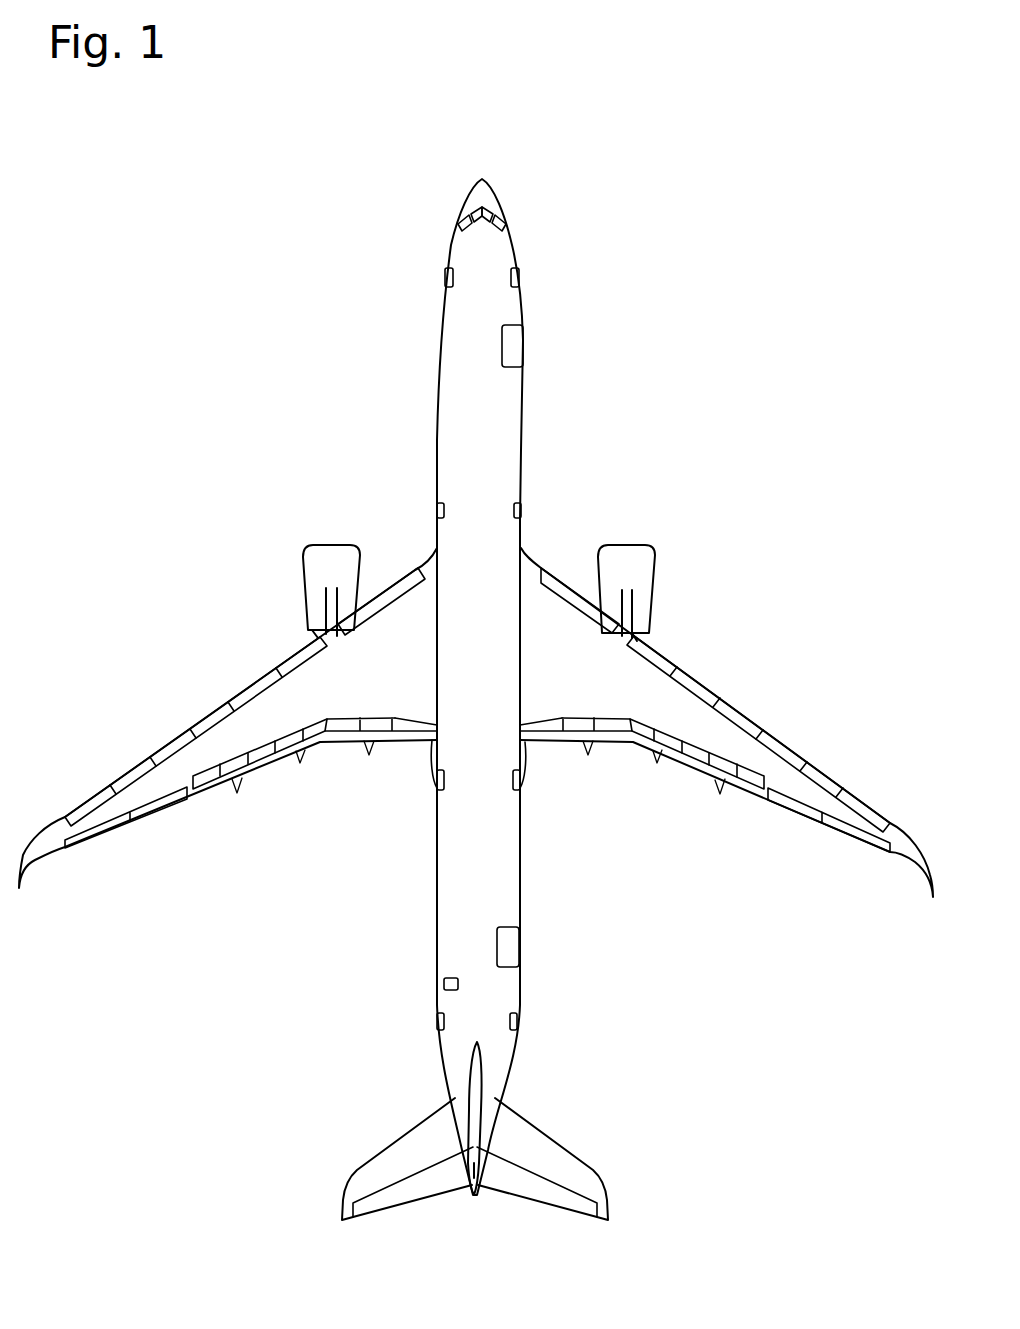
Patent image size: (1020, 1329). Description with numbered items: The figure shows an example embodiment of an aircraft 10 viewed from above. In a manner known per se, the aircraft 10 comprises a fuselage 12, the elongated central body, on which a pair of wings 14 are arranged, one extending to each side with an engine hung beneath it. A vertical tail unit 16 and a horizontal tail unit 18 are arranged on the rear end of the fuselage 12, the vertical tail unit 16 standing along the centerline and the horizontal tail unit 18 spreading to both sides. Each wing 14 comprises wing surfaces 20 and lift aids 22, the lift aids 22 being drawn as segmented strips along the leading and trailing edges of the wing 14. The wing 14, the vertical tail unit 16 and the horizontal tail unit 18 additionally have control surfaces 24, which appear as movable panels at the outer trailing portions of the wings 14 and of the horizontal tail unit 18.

The aircraft 10 is at (210, 246).
The fuselage 12 is at (437, 442).
The wing 14 is at (213, 616).
The vertical tail unit 16 is at (483, 1077).
The horizontal tail unit 18 is at (567, 1168).
The wing surfaces 20 is at (543, 626).
The lift aids 22 is at (200, 722).
The control surfaces 24 is at (130, 814).